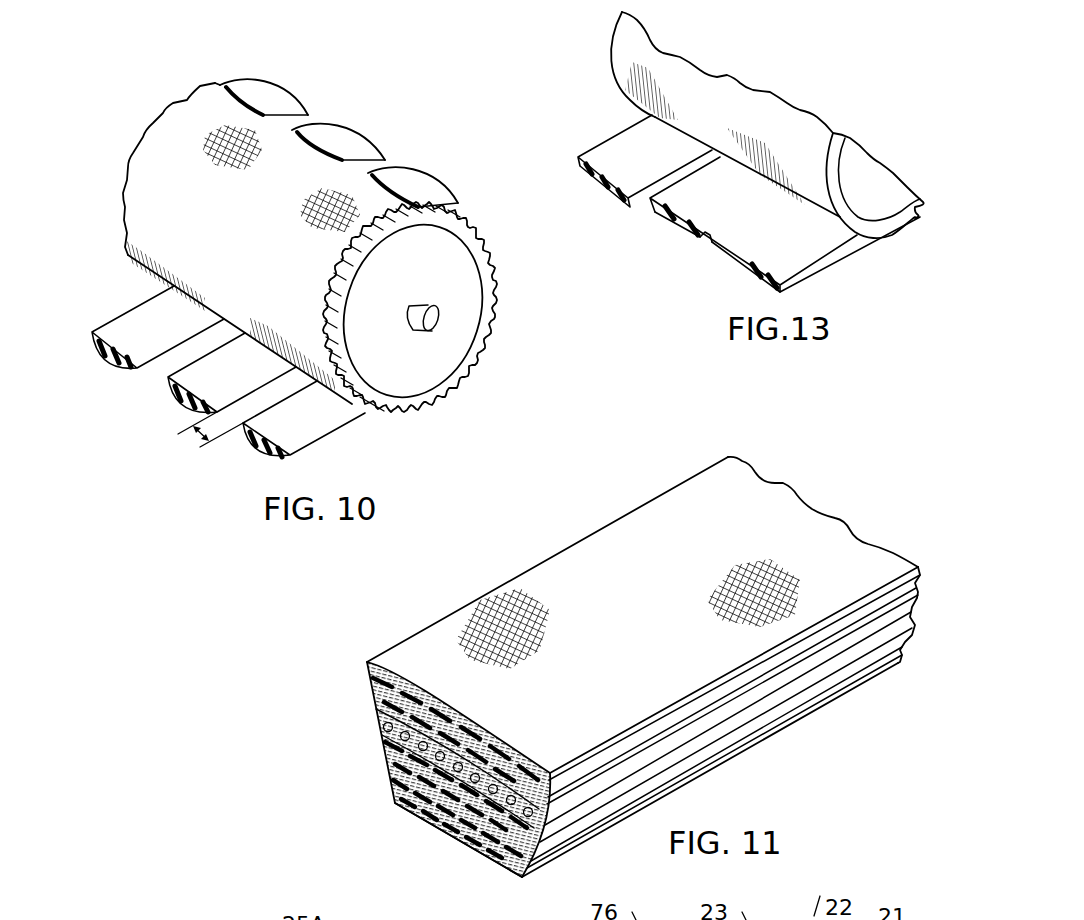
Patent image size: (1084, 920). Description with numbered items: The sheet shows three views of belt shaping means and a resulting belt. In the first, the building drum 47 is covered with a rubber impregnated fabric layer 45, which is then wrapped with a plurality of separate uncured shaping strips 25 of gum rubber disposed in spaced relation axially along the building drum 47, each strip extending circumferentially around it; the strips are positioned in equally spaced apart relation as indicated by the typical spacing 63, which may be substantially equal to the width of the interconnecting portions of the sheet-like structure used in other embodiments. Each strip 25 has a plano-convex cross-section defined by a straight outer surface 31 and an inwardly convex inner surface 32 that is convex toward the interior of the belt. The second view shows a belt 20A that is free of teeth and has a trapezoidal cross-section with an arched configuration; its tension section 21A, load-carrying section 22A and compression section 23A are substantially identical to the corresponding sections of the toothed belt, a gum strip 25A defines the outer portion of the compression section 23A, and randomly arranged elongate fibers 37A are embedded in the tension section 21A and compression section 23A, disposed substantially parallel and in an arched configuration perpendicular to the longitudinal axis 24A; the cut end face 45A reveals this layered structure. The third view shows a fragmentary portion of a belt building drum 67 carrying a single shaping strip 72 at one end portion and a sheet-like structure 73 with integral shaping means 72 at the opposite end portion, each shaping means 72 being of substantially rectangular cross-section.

In FIG. 11, the belt 20A is at (552, 534).
In FIG. 11, the tension section 21A is at (358, 686).
In FIG. 11, the load-carrying section 22A is at (360, 720).
In FIG. 11, the compression section 23A is at (372, 771).
In FIG. 11, the longitudinal axis 24A is at (395, 803).
In FIG. 11, the gum strip 25A is at (438, 837).
In FIG. 11, the elongate fibers 37A is at (523, 870).
In FIG. 11, the cut end face 45A is at (483, 858).
In FIG. 10, the shaping strips of uncured gum material 25 is at (110, 360).
In FIG. 10, the straight outer surface 31 is at (223, 104).
In FIG. 10, the inwardly convex inner surface 32 is at (247, 86).
In FIG. 10, the rubber impregnated fabric layer 45 is at (140, 193).
In FIG. 10, the building drum 47 is at (458, 282).
In FIG. 10, the spacing 63 is at (194, 432).
In FIG. 13, the belt building drum 67 is at (888, 244).
In FIG. 13, the shaping strip 72 is at (600, 143).
In FIG. 13, the sheet-like structure 73 is at (713, 256).